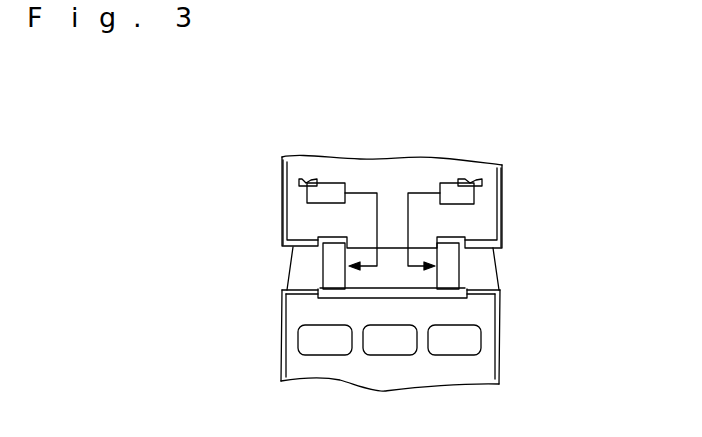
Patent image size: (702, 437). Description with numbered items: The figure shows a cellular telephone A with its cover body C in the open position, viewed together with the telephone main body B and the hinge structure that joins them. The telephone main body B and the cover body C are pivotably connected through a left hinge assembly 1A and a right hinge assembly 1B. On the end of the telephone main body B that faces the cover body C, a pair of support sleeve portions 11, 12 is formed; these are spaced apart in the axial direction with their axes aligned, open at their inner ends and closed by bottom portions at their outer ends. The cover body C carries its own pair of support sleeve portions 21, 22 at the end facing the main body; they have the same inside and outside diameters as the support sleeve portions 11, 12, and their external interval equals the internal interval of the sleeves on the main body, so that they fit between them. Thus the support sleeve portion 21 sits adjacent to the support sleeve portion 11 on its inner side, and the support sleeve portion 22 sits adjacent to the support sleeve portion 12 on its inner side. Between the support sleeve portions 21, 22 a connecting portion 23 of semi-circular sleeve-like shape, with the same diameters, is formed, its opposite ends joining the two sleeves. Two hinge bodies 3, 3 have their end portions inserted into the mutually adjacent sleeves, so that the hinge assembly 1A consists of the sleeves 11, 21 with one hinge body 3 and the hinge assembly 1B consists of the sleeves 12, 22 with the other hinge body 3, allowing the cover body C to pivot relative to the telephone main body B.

The cellular telephone A is at (546, 207).
The telephone main body B is at (503, 353).
The cover body C is at (307, 192).
The hinge body 3 is at (332, 183).
The hinge assembly 1A is at (284, 256).
The hinge assembly 1B is at (499, 262).
The support sleeve portion 11 is at (297, 278).
The support sleeve portion 12 is at (482, 278).
The support sleeve portion 21 is at (331, 257).
The support sleeve portion 22 is at (451, 252).
The connecting portion 23 is at (388, 277).